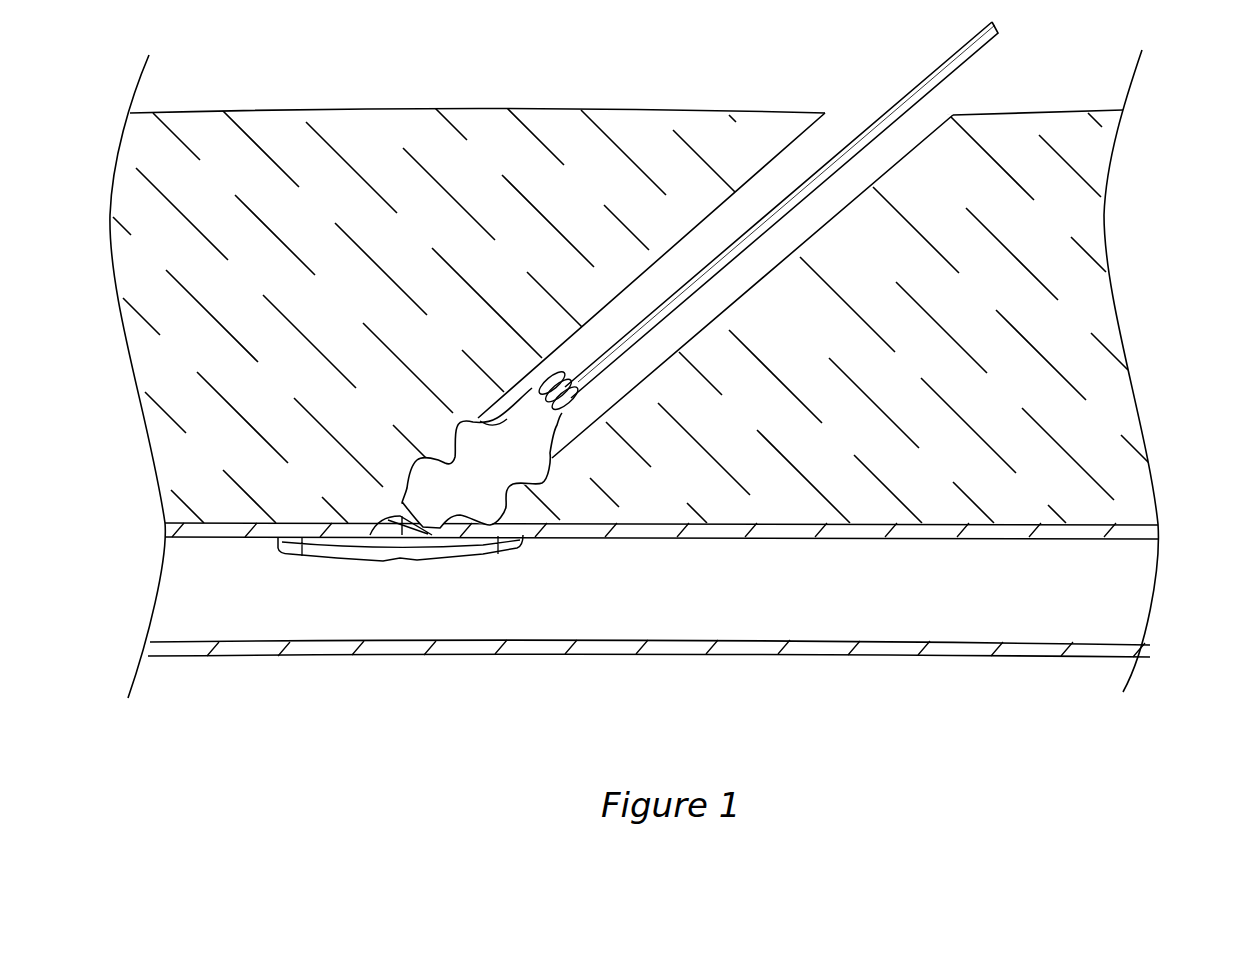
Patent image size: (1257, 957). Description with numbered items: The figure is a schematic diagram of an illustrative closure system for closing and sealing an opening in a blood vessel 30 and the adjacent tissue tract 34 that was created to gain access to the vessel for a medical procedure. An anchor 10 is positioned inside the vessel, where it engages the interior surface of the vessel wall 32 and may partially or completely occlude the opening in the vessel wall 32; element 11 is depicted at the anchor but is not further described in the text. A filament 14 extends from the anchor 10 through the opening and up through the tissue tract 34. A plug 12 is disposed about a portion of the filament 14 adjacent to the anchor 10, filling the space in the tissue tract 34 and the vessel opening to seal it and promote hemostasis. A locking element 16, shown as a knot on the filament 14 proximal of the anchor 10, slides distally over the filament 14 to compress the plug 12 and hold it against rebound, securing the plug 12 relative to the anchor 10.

The anchor 10 is at (315, 553).
The anchor 11 is at (397, 520).
The plug 12 is at (527, 500).
The filament 14 is at (950, 58).
The locking element 16 is at (568, 413).
The blood vessel 30 is at (1123, 605).
The vessel wall 32 is at (1110, 532).
The tissue tract 34 is at (937, 110).